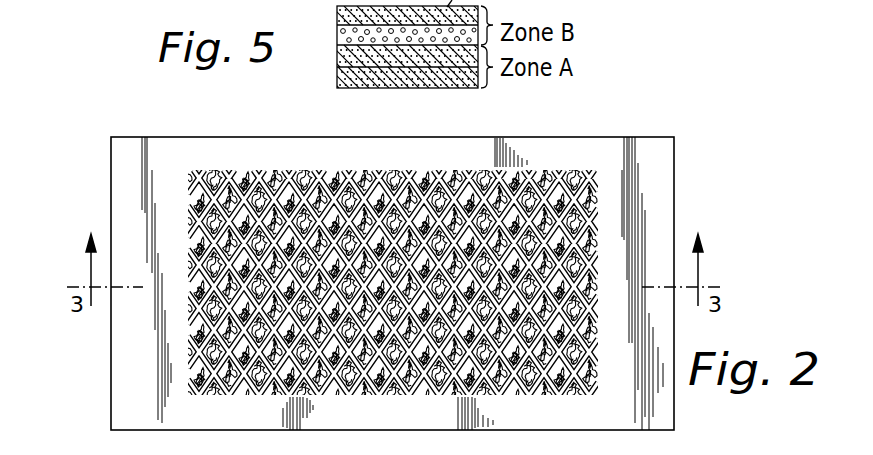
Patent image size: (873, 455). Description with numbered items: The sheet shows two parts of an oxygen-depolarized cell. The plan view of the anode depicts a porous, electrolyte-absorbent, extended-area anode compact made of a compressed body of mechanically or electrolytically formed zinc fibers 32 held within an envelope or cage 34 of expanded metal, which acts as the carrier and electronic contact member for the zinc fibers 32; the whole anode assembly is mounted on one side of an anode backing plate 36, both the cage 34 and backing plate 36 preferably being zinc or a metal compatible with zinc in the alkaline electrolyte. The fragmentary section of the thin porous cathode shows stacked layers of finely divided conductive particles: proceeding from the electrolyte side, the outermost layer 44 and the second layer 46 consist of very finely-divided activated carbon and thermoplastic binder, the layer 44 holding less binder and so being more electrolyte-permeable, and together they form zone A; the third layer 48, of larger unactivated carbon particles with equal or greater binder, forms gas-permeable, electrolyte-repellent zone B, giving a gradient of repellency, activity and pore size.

In FIG. 2, the zinc fibers 32 is at (483, 176).
In FIG. 2, the envelope or cage of expanded metal 34 is at (567, 173).
In FIG. 2, the anode backing plate 36 is at (655, 153).
In FIG. 5, the outermost layer 44 is at (403, 86).
In FIG. 5, the second layer 46 is at (352, 58).
In FIG. 5, the third layer 48 is at (348, 34).